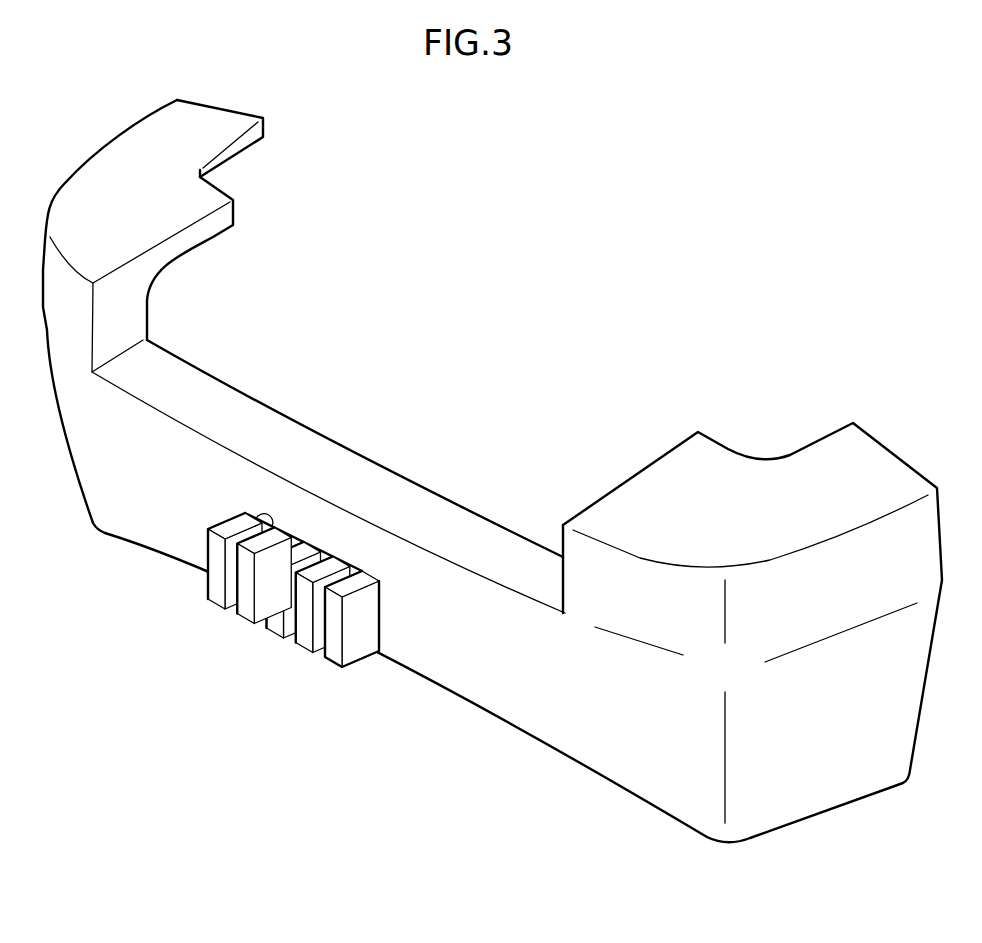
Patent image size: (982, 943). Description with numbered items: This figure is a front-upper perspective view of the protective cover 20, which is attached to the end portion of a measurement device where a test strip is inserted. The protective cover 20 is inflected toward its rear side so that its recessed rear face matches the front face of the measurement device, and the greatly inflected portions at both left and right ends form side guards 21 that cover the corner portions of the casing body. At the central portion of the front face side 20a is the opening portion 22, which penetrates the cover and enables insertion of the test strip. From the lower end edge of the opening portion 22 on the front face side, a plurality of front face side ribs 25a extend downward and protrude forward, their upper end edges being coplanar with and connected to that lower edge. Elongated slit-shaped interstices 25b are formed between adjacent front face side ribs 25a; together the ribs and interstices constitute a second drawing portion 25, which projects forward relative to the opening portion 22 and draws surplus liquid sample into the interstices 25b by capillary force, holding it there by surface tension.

The protective cover 20 is at (492, 464).
The front face side 20a is at (600, 715).
The side guards 21 is at (115, 180).
The opening portion 22 is at (202, 666).
The second drawing portion 25 is at (202, 666).
The front face side ribs 25a is at (222, 567).
The interstices 25b is at (236, 586).